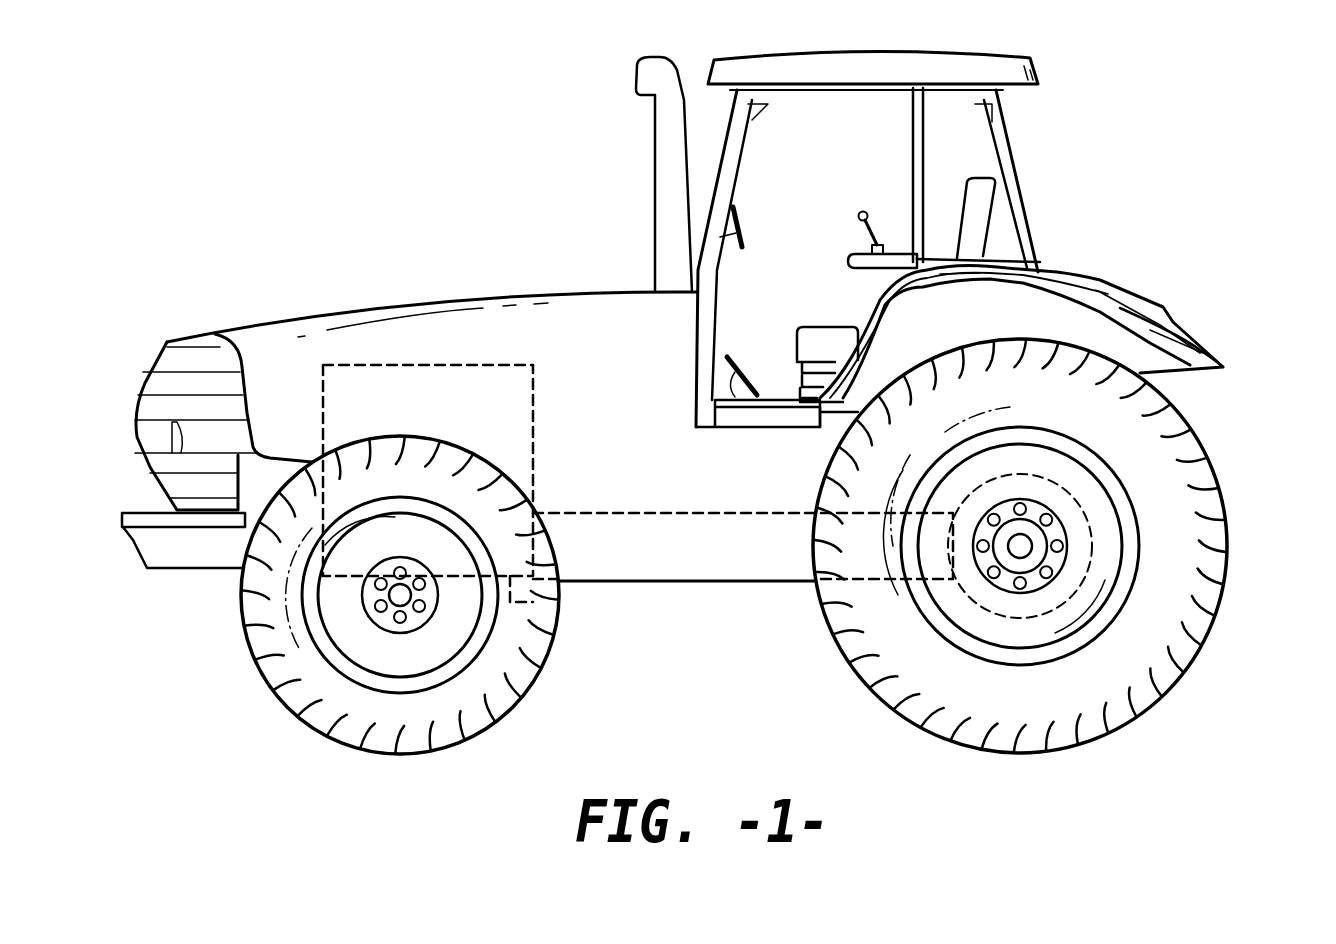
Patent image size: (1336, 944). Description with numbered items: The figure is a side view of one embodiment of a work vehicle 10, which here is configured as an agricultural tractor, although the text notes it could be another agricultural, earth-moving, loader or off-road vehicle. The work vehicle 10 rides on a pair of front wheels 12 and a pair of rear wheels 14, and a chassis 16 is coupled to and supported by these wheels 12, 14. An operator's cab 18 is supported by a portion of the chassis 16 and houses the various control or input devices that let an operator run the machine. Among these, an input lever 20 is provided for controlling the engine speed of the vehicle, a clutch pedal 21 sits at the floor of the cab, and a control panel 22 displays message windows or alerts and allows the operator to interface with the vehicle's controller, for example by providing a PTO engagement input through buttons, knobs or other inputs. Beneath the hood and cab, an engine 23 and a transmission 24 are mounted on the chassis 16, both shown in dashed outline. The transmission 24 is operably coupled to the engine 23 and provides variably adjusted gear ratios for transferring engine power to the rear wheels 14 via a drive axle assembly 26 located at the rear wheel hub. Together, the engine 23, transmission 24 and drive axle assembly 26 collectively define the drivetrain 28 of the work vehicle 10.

The work vehicle 10 is at (327, 194).
The front wheels 12 is at (242, 617).
The rear wheels 14 is at (1224, 577).
The chassis 16 is at (630, 582).
The operator's cab 18 is at (1028, 184).
The input lever 20 is at (857, 215).
The clutch pedal 21 is at (745, 392).
The control panel 22 is at (743, 213).
The engine 23 is at (400, 363).
The transmission 24 is at (697, 513).
The drive axle assembly 26 is at (1097, 549).
The drivetrain 28 is at (596, 326).